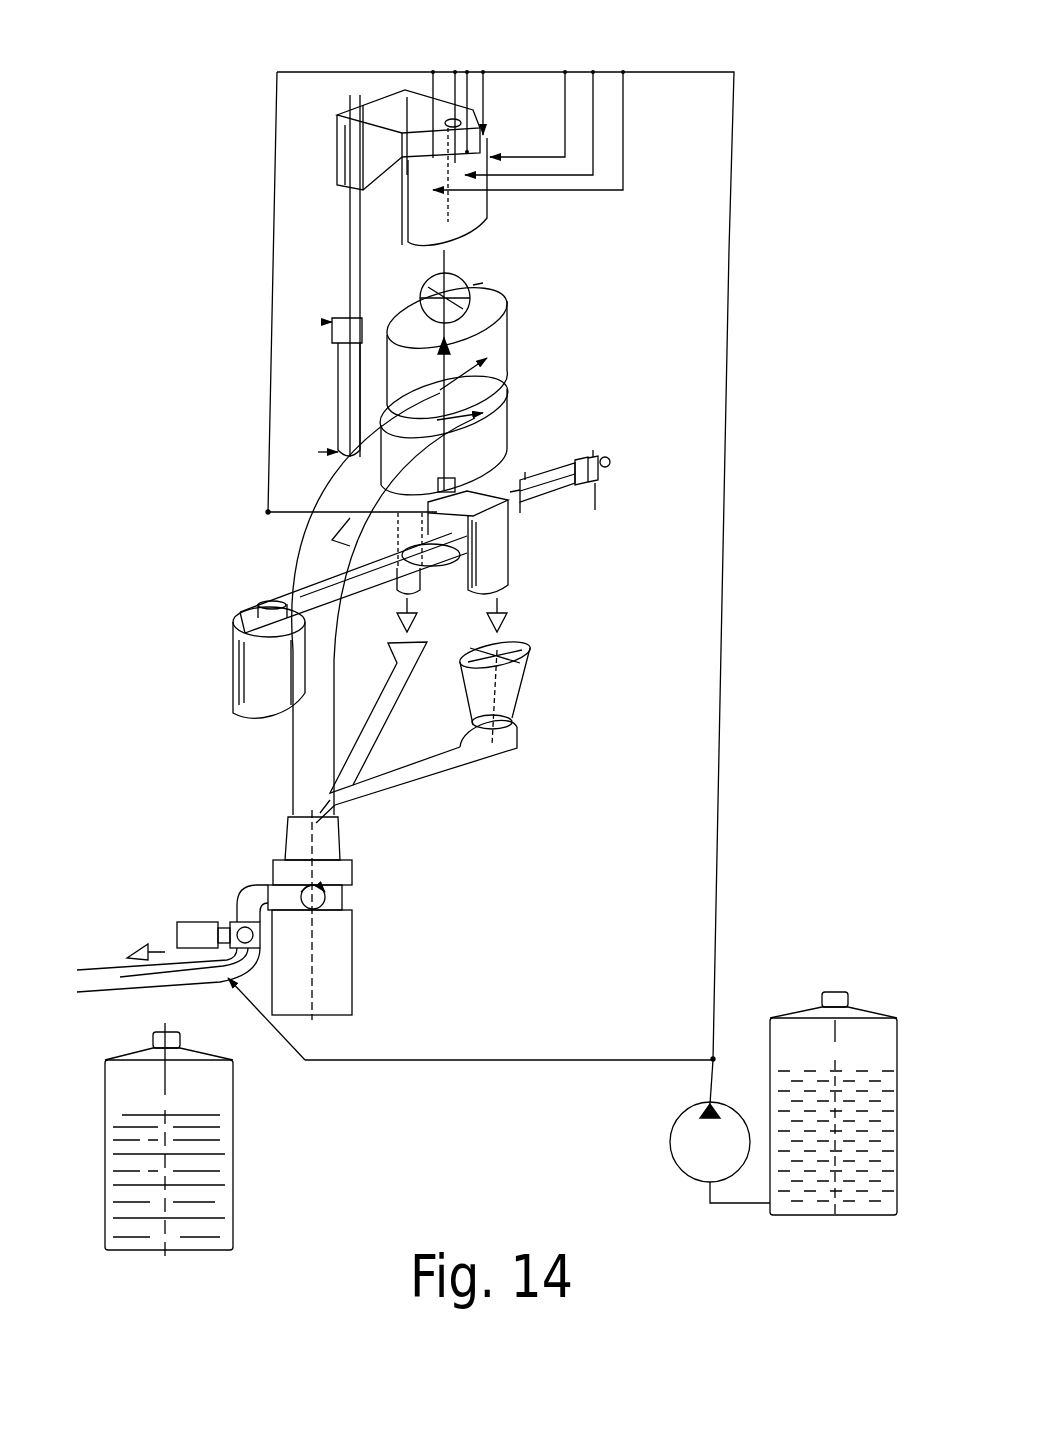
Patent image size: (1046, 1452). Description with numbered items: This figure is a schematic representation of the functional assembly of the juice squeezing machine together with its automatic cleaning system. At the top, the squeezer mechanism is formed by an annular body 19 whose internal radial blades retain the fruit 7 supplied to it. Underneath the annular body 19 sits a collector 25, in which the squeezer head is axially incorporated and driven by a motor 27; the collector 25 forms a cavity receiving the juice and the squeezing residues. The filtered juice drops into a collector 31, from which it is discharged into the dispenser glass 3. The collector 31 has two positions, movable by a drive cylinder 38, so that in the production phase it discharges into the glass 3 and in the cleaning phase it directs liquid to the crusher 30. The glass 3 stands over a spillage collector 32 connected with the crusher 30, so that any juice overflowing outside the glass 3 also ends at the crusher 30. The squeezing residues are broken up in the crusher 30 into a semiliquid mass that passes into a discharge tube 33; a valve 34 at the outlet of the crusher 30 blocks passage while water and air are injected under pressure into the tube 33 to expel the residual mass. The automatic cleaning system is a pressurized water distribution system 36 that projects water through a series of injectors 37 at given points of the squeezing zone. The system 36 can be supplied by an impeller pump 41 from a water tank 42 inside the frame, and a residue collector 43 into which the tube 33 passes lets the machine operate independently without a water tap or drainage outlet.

The dispenser glass 3 is at (530, 682).
The fruit 7 is at (468, 274).
The annular body 19 is at (515, 325).
The collector 25 is at (520, 408).
The motor 27 is at (228, 681).
The crusher 30 is at (358, 972).
The collector 31 is at (514, 558).
The spillage collector 32 is at (522, 749).
The discharge tube 33 is at (115, 955).
The valve 34 is at (186, 920).
The pressurized water distribution system 36 is at (722, 725).
The injectors 37 is at (448, 66).
The drive cylinder 38 is at (572, 456).
The impeller pump 41 is at (668, 1140).
The water tank 42 is at (824, 1218).
The residue collector 43 is at (238, 1165).